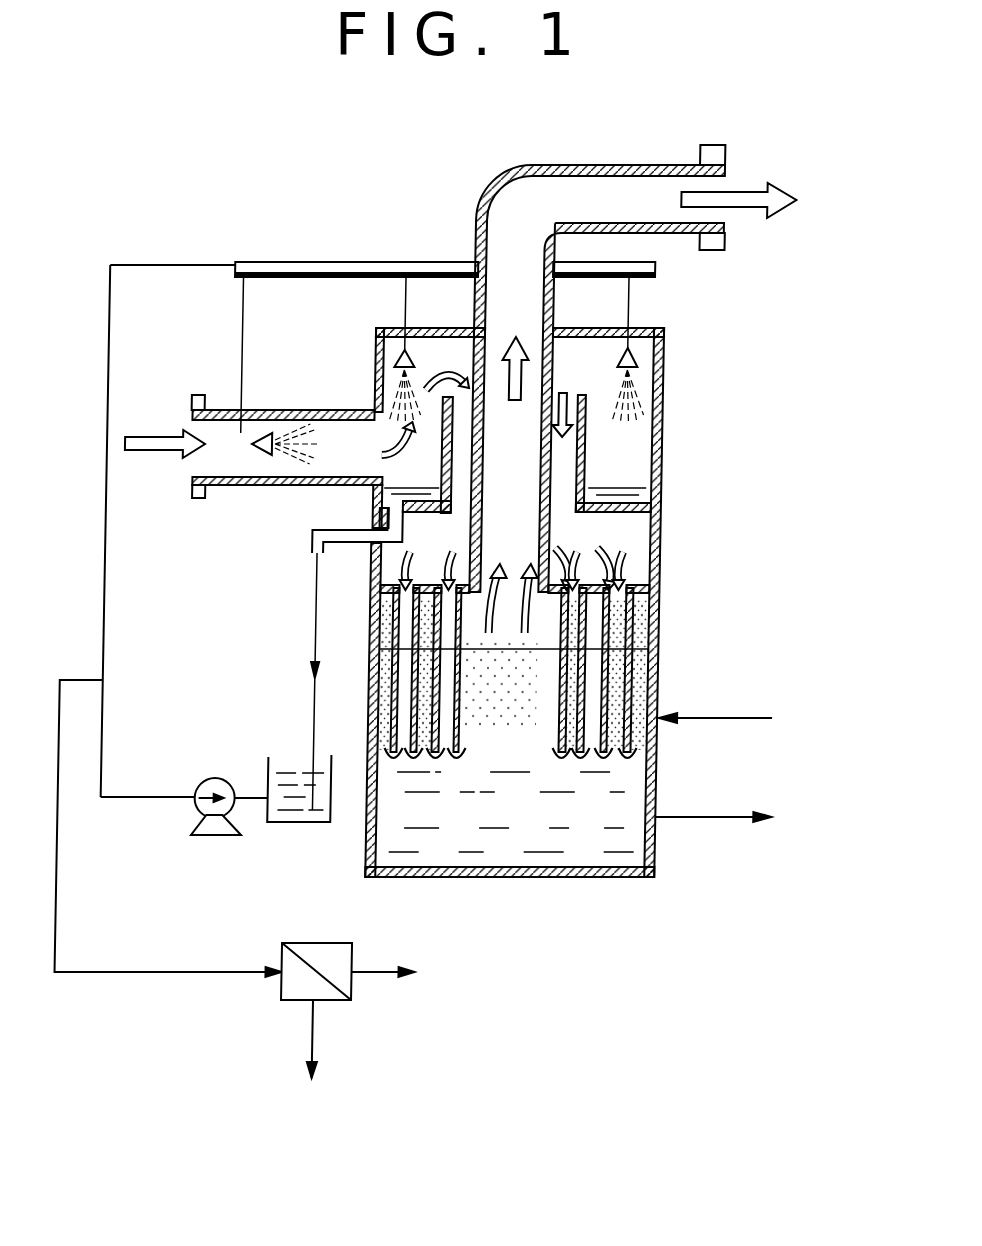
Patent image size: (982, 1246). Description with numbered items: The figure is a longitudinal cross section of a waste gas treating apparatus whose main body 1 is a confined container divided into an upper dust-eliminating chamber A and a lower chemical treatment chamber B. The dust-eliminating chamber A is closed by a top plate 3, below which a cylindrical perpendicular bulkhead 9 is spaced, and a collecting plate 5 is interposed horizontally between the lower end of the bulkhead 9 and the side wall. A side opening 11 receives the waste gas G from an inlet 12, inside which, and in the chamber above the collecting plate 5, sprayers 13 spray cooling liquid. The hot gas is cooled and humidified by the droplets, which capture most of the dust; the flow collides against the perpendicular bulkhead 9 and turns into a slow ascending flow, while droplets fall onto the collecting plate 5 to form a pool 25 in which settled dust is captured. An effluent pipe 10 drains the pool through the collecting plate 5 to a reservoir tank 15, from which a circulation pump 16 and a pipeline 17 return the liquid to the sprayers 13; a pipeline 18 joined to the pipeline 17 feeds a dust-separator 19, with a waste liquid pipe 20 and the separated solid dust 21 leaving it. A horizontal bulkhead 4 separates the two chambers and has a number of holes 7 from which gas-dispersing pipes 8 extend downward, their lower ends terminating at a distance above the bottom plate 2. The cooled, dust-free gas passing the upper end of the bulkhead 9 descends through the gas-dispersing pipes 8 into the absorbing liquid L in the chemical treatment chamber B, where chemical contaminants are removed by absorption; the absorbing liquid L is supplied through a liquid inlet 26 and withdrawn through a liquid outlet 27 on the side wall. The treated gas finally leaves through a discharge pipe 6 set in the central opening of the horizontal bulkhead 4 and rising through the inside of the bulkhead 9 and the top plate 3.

The main body 1 is at (670, 383).
The bottom plate 2 is at (494, 877).
The top plate 3 is at (636, 330).
The horizontal bulkhead 4 is at (441, 587).
The collecting plate 5 is at (637, 495).
The discharge pipe 6 is at (556, 527).
The holes 7 is at (660, 583).
The gas-dispersing pipes 8 is at (657, 662).
The cylindrical perpendicular bulkhead 9 is at (593, 427).
The effluent pipe 10 is at (316, 532).
The side opening 11 is at (376, 453).
The inlet 12 is at (280, 410).
The sprayers 13 is at (266, 457).
The reservoir tank 15 is at (282, 765).
The circulation pump 16 is at (225, 830).
The pipeline 17 is at (116, 605).
The pipeline 18 is at (190, 972).
The dust-separator 19 is at (315, 1000).
The waste liquid pipe 20 is at (401, 975).
The dust separated as solids 21 is at (336, 1037).
The pool 25 is at (636, 475).
The liquid inlet 26 is at (735, 718).
The liquid outlet 27 is at (735, 818).
The dust-eliminating chamber A is at (626, 450).
The chemical treatment chamber B is at (634, 782).
The gas G is at (170, 450).
The absorbing liquid L is at (591, 840).